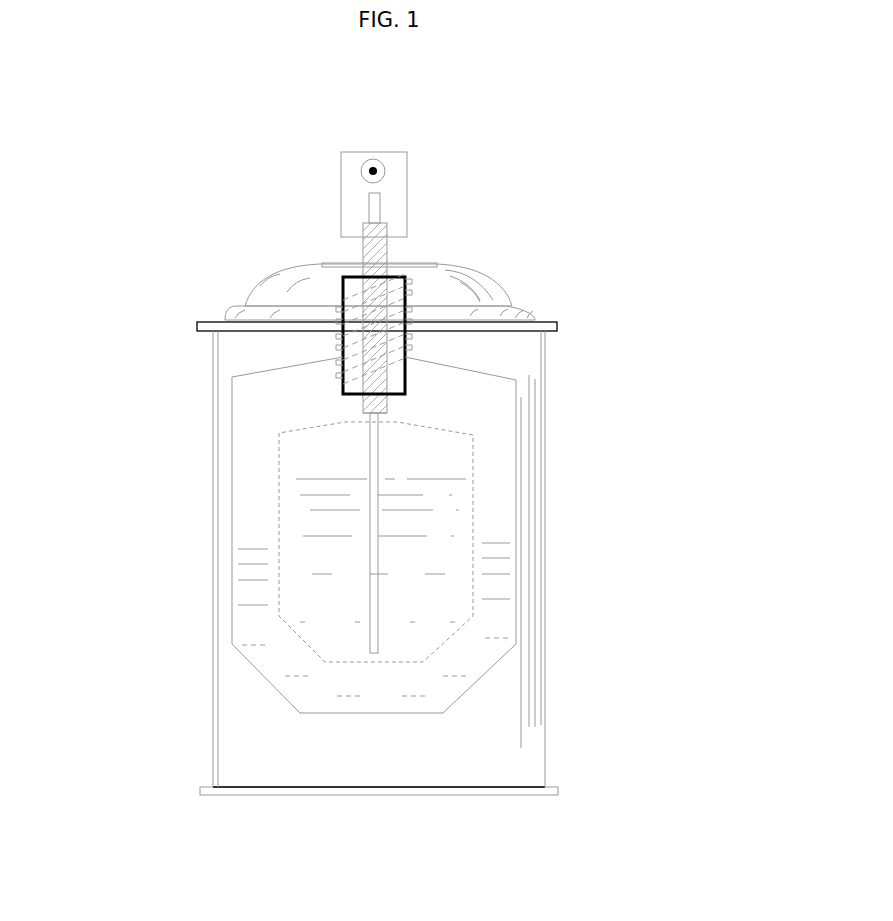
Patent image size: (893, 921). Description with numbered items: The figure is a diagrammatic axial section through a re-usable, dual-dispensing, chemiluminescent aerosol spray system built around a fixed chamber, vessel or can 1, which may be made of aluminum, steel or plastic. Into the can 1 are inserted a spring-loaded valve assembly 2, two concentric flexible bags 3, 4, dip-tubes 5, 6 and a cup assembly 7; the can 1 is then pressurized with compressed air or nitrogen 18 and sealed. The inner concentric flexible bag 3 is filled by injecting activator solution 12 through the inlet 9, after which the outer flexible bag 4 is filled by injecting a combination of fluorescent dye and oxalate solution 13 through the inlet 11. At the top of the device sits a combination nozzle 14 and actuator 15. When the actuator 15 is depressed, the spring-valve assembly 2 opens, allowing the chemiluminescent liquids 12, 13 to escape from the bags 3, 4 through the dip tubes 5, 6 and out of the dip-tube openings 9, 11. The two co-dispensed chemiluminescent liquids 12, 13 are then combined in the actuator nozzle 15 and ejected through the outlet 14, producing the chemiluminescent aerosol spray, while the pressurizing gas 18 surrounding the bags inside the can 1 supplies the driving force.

The can 1 is at (547, 766).
The spring-loaded valve assembly 2 is at (341, 344).
The inner concentric flexible bag 3 is at (473, 439).
The outer flexible bag 4 is at (515, 382).
The dip-tube 5 is at (374, 522).
The dip-tube 6 is at (361, 407).
The cup assembly 7 is at (256, 278).
The inlet 9 is at (383, 194).
The inlet 11 is at (388, 215).
The activator solution 12 is at (450, 522).
The fluorescent dye and oxalate solution 13 is at (492, 587).
The nozzle 14 is at (361, 176).
The actuator 15 is at (339, 160).
The compressed air or nitrogen 18 is at (279, 752).